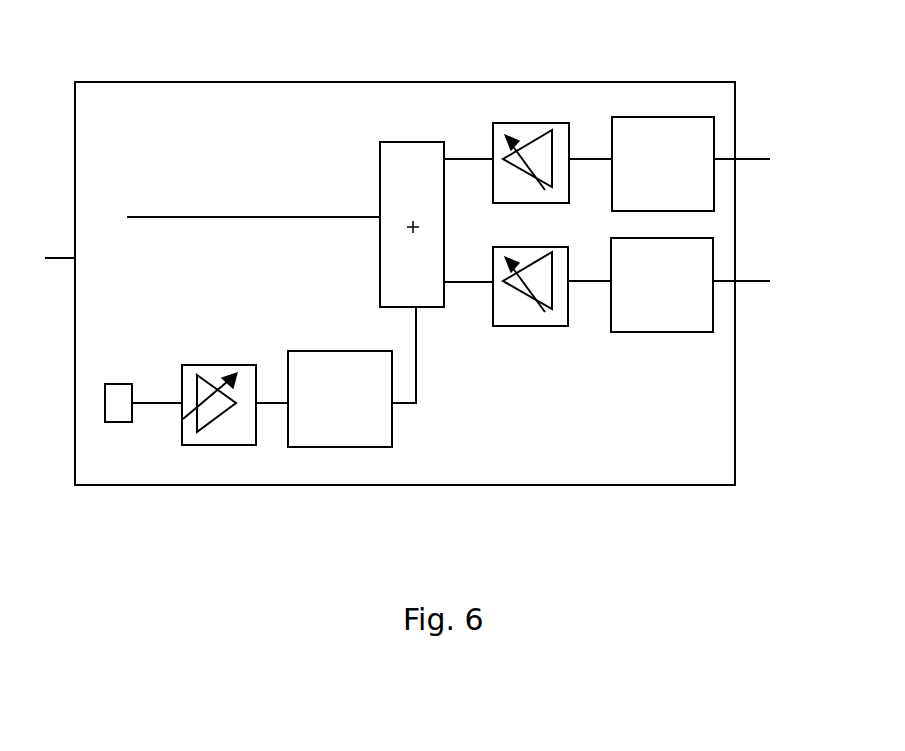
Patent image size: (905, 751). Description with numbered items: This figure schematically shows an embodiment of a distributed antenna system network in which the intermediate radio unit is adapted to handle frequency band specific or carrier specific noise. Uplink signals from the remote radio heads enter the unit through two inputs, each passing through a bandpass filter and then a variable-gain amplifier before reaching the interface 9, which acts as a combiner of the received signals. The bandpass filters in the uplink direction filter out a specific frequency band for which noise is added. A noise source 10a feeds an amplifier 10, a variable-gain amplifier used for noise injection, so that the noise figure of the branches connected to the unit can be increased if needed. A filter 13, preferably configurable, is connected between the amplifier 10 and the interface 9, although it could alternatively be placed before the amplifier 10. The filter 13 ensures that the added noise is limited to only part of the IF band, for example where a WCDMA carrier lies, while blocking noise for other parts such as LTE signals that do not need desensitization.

The interface 9 is at (408, 150).
The amplifier 10 is at (197, 433).
The noise source 10a is at (120, 423).
The filter 13 is at (307, 437).